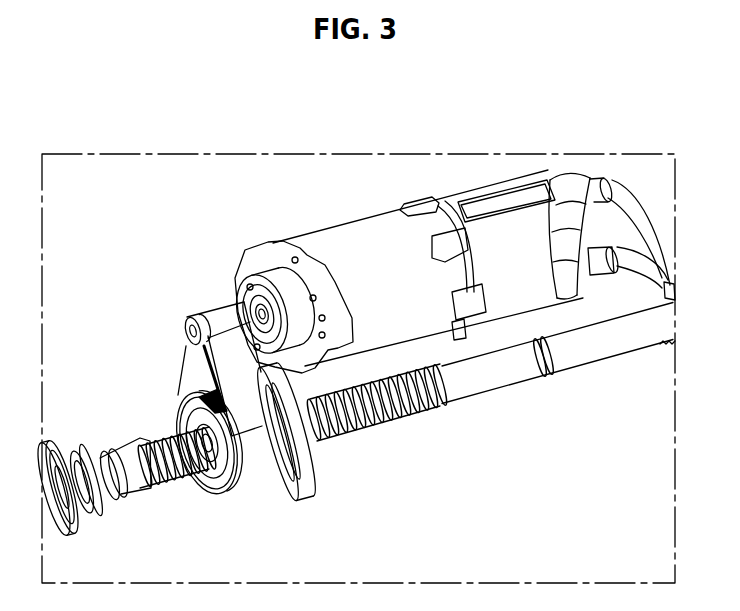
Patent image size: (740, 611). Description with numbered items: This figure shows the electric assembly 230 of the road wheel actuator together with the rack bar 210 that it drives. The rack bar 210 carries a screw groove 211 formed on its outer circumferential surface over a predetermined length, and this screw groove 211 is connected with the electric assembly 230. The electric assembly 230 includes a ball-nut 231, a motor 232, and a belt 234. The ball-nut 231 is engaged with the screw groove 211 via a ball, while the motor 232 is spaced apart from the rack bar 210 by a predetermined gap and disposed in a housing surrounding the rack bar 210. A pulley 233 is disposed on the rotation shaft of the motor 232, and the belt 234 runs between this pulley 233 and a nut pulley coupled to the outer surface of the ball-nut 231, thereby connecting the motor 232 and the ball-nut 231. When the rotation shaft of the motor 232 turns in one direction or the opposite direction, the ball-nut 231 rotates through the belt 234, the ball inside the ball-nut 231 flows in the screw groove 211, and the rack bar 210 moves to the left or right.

The electric assembly 230 is at (87, 97).
The motor 232 is at (360, 243).
The pulley 233 is at (186, 322).
The ball-nut 231 is at (208, 497).
The belt 234 is at (249, 468).
The screw groove 211 is at (377, 427).
The rack bar 210 is at (598, 348).